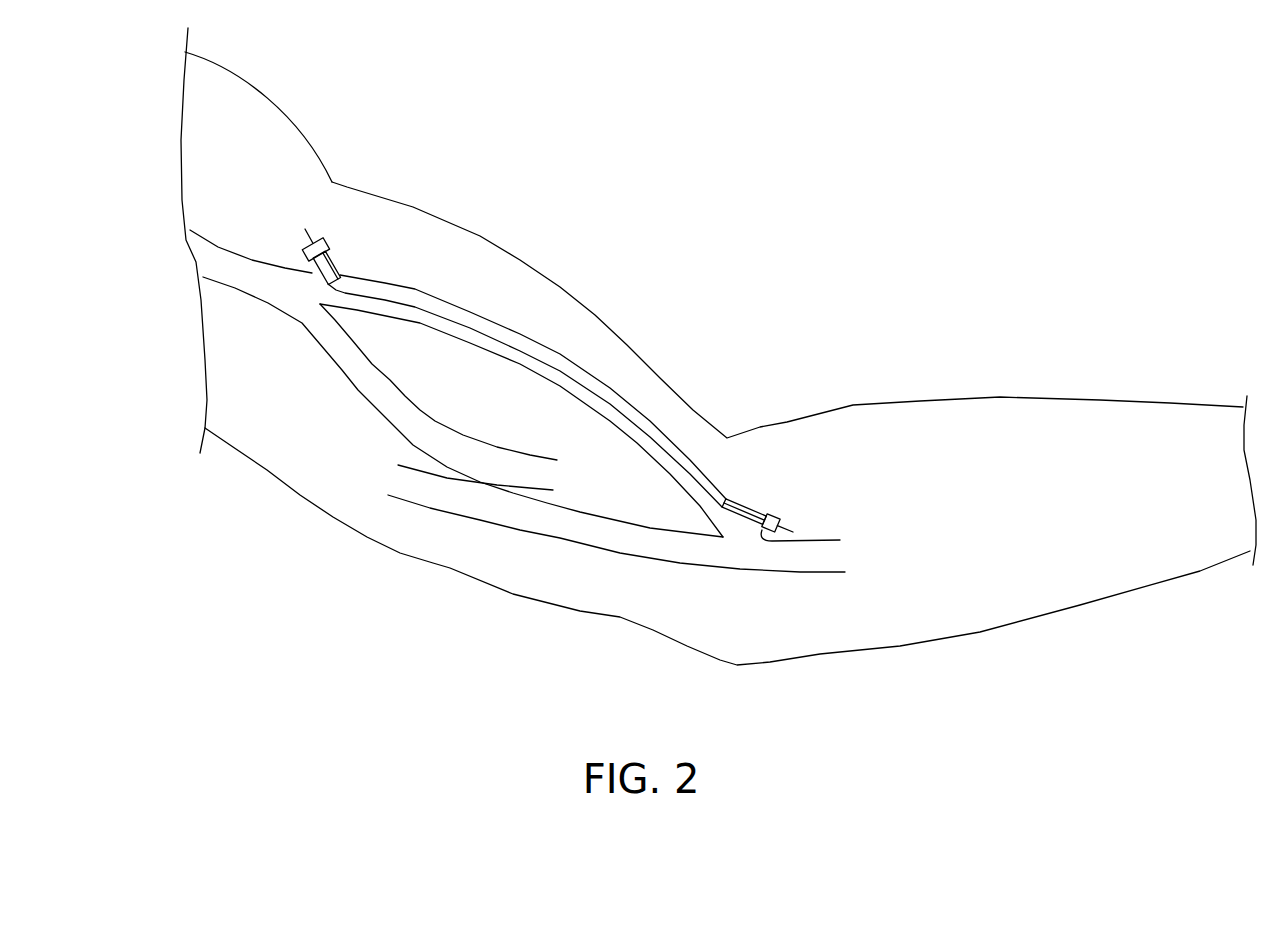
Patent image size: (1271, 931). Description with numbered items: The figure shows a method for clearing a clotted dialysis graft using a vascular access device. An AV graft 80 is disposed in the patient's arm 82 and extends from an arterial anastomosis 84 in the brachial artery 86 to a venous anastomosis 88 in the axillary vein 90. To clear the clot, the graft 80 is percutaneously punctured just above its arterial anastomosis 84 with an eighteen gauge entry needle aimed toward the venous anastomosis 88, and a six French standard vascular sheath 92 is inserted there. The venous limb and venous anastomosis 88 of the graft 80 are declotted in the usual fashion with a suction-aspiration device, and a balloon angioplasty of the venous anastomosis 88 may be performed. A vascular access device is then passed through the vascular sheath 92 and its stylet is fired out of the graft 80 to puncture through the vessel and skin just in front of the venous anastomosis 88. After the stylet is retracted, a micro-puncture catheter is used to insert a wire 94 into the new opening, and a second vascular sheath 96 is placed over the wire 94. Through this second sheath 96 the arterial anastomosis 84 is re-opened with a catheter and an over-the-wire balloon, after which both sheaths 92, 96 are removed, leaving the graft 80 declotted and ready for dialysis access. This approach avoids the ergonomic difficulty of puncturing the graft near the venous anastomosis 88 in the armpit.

The AV graft 80 is at (487, 317).
The arm 82 is at (423, 211).
The arterial anastomosis 84 is at (742, 537).
The brachial artery 86 is at (565, 532).
The venous anastomosis 88 is at (293, 292).
The axillary vein 90 is at (357, 378).
The vascular sheath 92 is at (761, 513).
The wire 94 is at (610, 402).
The second vascular sheath 96 is at (336, 264).